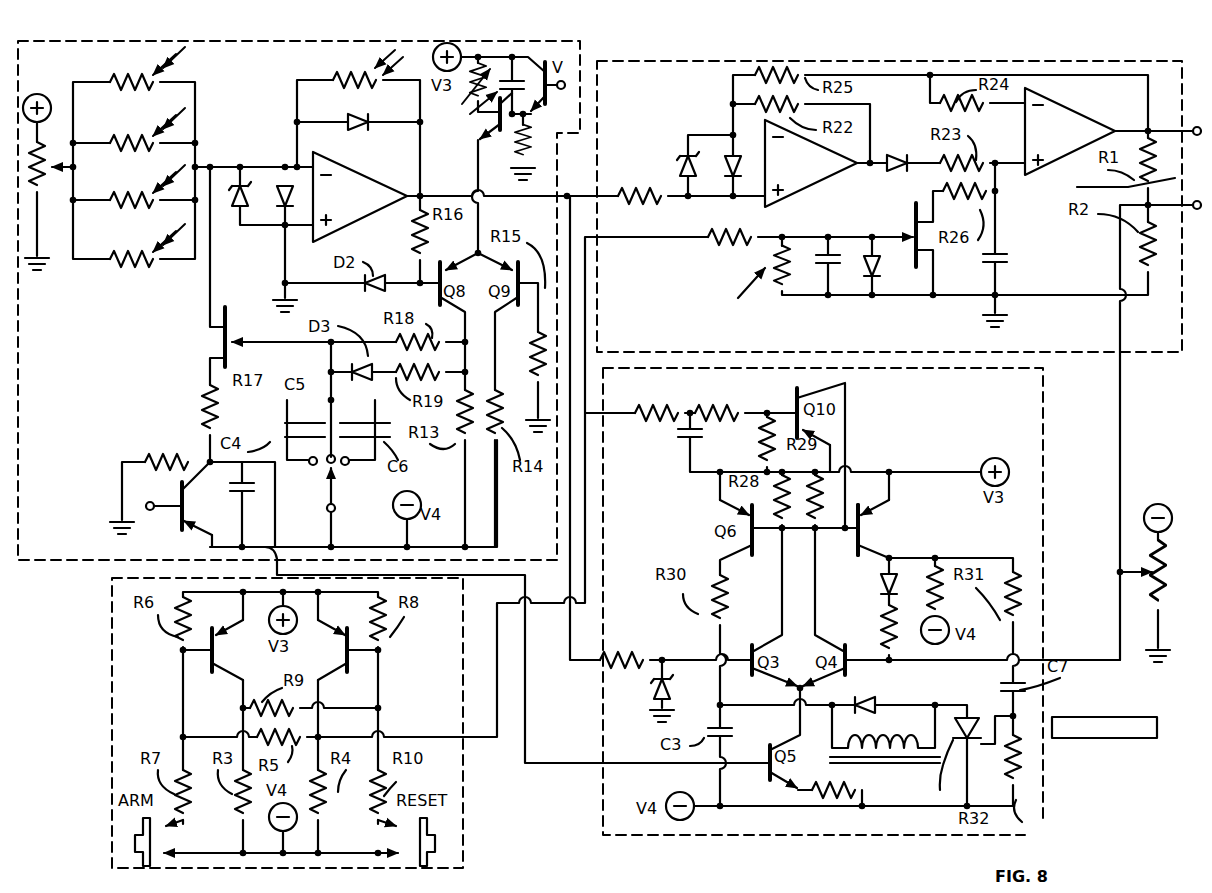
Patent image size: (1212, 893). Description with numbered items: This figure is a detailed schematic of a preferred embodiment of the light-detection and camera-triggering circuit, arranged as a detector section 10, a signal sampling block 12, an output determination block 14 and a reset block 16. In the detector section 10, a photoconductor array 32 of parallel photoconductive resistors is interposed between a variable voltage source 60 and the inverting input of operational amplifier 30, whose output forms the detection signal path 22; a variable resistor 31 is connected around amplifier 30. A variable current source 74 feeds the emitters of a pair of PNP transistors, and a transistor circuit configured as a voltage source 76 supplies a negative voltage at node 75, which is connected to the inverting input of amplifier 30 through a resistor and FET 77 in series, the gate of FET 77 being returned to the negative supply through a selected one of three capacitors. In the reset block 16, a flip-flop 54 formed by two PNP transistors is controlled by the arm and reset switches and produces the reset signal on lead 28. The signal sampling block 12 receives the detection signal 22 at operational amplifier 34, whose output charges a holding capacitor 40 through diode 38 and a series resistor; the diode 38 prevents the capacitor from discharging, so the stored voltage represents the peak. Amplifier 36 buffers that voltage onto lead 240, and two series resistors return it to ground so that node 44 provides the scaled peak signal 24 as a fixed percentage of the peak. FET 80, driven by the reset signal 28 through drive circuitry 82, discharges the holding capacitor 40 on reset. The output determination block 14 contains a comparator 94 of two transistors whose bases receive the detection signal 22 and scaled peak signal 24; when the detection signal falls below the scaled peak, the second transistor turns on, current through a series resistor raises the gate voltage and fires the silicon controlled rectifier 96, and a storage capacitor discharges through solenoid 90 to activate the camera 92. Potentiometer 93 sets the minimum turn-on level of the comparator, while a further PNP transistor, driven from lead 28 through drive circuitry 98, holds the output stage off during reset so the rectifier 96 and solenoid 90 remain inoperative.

The light detector circuit 10 is at (98, 560).
The signal sampling block 12 is at (708, 61).
The output determination block 14 is at (832, 840).
The reset block 16 is at (466, 822).
The detection signal path 22 is at (544, 198).
The scaled peak signal 24 is at (1120, 410).
The reset signal lead 28 is at (470, 738).
The operational amplifier 30 is at (348, 170).
The variable resistor 31 is at (355, 72).
The photoconductor array 32 is at (196, 104).
The operational amplifier 34 is at (802, 206).
The amplifier 36 is at (1072, 110).
The diode 38 is at (885, 172).
The holding capacitor 40 is at (1006, 254).
The node 44 is at (1108, 180).
The flip-flop 54 is at (170, 708).
The variable voltage source 60 is at (47, 77).
The variable current source 74 is at (471, 131).
The node 75 is at (202, 456).
The voltage source 76 is at (116, 455).
The FET 77 is at (244, 316).
The FET 80 is at (902, 226).
The drive circuitry 82 is at (746, 277).
The solenoid 90 is at (881, 761).
The camera 92 is at (1078, 740).
The potentiometer 93 is at (1172, 588).
The comparator 94 is at (886, 454).
The silicon controlled rectifier 96 is at (942, 762).
The drive circuitry 98 is at (668, 450).
The lead 240 is at (1191, 119).